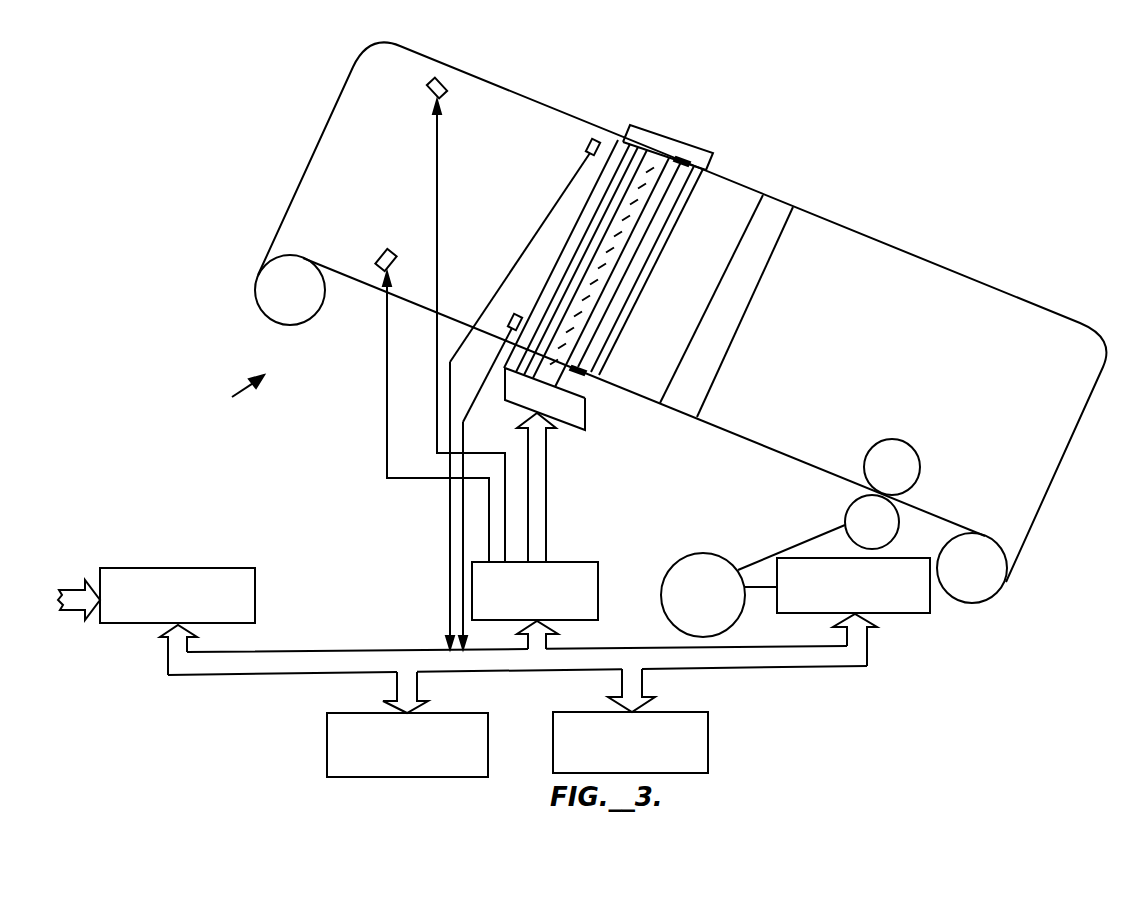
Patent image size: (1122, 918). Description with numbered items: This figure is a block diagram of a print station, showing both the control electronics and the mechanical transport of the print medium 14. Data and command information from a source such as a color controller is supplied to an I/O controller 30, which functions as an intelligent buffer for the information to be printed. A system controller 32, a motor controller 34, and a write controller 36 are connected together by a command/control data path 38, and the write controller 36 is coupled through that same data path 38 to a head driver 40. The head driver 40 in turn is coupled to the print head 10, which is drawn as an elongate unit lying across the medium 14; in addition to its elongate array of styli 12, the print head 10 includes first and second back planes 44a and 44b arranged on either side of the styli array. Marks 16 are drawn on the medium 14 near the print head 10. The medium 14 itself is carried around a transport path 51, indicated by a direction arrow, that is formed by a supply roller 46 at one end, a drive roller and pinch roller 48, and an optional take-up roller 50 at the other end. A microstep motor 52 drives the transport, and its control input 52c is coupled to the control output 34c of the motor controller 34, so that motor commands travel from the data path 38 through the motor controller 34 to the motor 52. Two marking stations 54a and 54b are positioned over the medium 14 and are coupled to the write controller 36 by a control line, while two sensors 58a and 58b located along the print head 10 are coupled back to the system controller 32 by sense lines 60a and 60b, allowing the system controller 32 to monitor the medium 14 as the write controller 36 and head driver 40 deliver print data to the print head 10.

The print head 10 is at (697, 156).
The elongate array of styli 12 is at (643, 178).
The medium 14 is at (870, 230).
The belt marks 16 is at (780, 204).
The I/O controller 30 is at (216, 568).
The system controller 32 is at (450, 713).
The motor controller 34 is at (893, 558).
The control output 34c is at (778, 604).
The write controller 36 is at (678, 712).
The command/control data path 38 is at (598, 650).
The head driver 40 is at (582, 562).
The first back plane 44a is at (578, 260).
The second back plane 44b is at (628, 268).
The supply roller 46 is at (258, 276).
The drive roller and pinch roller 48 is at (866, 478).
The take-up roller 50 is at (1008, 584).
The transport path 51 is at (233, 392).
The microstep motor 52 is at (712, 555).
The control input 52c is at (746, 598).
The marking station 54a is at (380, 280).
The marking station 54b is at (441, 78).
The sensor 58a is at (518, 312).
The sensor 58b is at (596, 138).
The sense line 60a is at (448, 554).
The sense line 60b is at (462, 581).